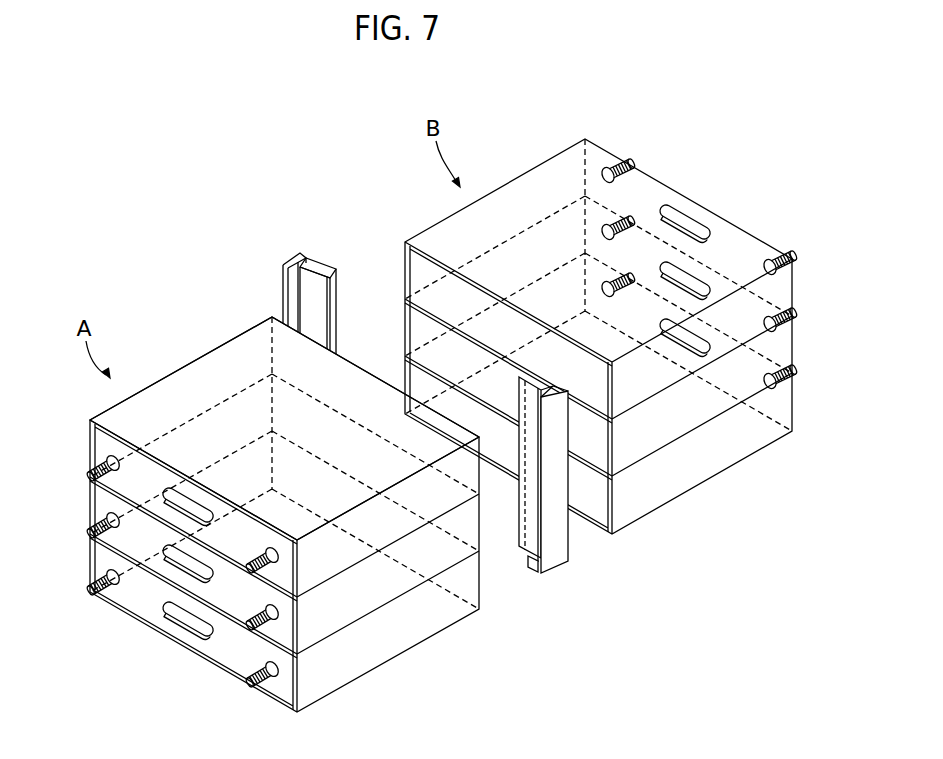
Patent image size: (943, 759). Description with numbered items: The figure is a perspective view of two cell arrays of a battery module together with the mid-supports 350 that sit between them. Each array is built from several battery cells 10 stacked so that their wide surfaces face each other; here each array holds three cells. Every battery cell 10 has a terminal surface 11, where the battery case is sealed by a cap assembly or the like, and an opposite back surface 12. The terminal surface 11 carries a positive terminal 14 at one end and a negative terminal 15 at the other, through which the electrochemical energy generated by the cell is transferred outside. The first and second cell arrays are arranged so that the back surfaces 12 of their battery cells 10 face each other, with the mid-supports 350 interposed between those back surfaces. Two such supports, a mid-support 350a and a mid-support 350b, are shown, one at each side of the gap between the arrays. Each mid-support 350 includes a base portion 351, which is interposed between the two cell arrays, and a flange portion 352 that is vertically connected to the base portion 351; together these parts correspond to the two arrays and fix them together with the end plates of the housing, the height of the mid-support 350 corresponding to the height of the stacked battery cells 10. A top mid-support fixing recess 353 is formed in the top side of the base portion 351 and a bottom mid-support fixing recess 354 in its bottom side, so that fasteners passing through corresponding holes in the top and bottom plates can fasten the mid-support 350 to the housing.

The battery cell 10 is at (152, 390).
The terminal surface 11 is at (143, 607).
The back surface 12 is at (293, 348).
The positive terminal 14 is at (90, 466).
The negative terminal 15 is at (247, 572).
The mid-support 350 is at (452, 394).
The mid-support 350a is at (578, 453).
The mid-support 350b is at (309, 267).
The base portion 351 is at (537, 540).
The flange portion 352 is at (550, 540).
The top mid-support fixing recess 353 is at (308, 262).
The bottom mid-support fixing recess 354 is at (538, 563).